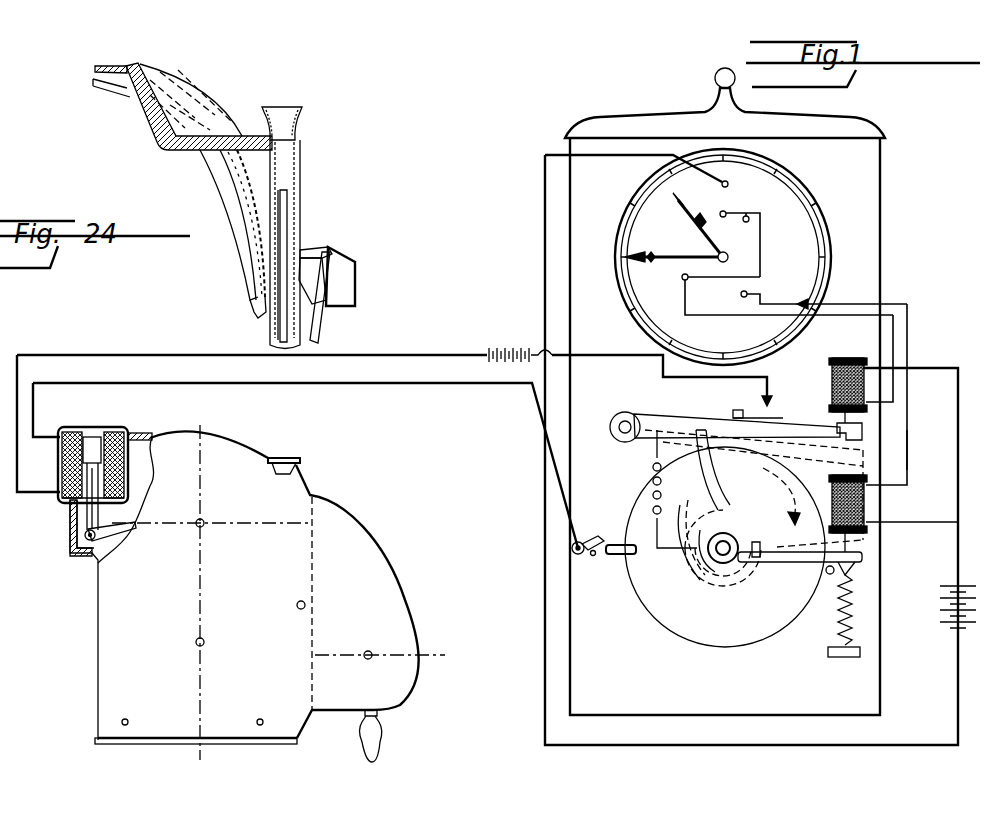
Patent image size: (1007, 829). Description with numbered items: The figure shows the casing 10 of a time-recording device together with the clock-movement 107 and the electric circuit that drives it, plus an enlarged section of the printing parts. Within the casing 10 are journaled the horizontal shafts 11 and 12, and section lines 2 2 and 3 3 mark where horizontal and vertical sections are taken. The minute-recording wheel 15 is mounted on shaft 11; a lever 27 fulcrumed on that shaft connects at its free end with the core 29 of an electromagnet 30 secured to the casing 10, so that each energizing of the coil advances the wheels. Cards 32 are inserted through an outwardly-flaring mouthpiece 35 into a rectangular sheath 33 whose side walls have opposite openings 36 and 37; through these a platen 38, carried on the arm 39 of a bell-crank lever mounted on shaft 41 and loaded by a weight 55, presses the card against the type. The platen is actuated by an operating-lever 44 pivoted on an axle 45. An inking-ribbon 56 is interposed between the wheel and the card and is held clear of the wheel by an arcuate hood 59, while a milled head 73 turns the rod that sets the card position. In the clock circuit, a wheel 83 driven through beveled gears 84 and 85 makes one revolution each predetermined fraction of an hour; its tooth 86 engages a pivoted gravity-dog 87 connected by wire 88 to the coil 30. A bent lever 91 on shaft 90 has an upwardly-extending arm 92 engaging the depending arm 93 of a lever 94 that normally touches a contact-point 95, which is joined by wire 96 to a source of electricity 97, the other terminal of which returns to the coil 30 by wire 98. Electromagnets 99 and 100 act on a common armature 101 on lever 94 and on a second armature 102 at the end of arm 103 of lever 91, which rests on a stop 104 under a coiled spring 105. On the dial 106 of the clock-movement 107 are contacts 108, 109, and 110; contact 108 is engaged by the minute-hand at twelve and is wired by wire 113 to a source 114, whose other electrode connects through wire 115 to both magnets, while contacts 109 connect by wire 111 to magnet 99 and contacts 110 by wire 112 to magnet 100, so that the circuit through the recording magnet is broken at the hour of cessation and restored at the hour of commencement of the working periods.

In FIG. 1, the section line 2 2 is at (60, 535).
In FIG. 1, the section line 3 3 is at (200, 594).
In FIG. 1, the casing 10 is at (98, 625).
In FIG. 1, the shaft 11 is at (217, 510).
In FIG. 1, the shaft 12 is at (205, 642).
In FIG. 24, the minute-recording wheel 15 is at (248, 242).
In FIG. 1, the lever 27 is at (113, 521).
In FIG. 1, the core 29 is at (87, 513).
In FIG. 1, the electromagnet 30 is at (60, 461).
In FIG. 24, the card 32 is at (287, 210).
In FIG. 24, the sheath 33 is at (293, 175).
In FIG. 24, the mouthpiece 35 is at (302, 122).
In FIG. 1, the mouthpiece 35 is at (292, 457).
In FIG. 24, the opening 36 is at (300, 250).
In FIG. 24, the opening 37 is at (278, 236).
In FIG. 24, the platen 38 is at (312, 278).
In FIG. 24, the arm 39 is at (320, 328).
In FIG. 1, the shaft 41 is at (305, 601).
In FIG. 1, the operating-lever 44 is at (380, 735).
In FIG. 1, the axle 45 is at (372, 651).
In FIG. 24, the weight 55 is at (355, 293).
In FIG. 24, the ribbon 56 is at (255, 318).
In FIG. 24, the arcuate hood 59 is at (243, 173).
In FIG. 1, the milled head 73 is at (300, 462).
In FIG. 1, the wheel 83 is at (725, 547).
In FIG. 1, the beveled gear 84 is at (769, 496).
In FIG. 1, the beveled gear 85 is at (715, 577).
In FIG. 1, the tooth 86 is at (610, 561).
In FIG. 1, the gravity-dog 87 is at (597, 540).
In FIG. 1, the wire 88 is at (305, 465).
In FIG. 1, the shaft 90 is at (737, 546).
In FIG. 1, the bent lever 91 is at (706, 557).
In FIG. 1, the arm 92 is at (690, 527).
In FIG. 1, the depending arm 93 is at (712, 467).
In FIG. 1, the lever 94 is at (681, 417).
In FIG. 1, the contact-point 95 is at (773, 408).
In FIG. 1, the wire 96 is at (602, 348).
In FIG. 1, the source of electricity 97 is at (500, 350).
In FIG. 1, the wire 98 is at (252, 408).
In FIG. 1, the electromagnet 99 is at (868, 365).
In FIG. 1, the electromagnet 100 is at (866, 505).
In FIG. 1, the armature 101 is at (862, 428).
In FIG. 1, the armature 102 is at (864, 556).
In FIG. 1, the arm 103 is at (784, 569).
In FIG. 1, the stop 104 is at (830, 577).
In FIG. 1, the coiled spring 105 is at (858, 606).
In FIG. 1, the dial 106 is at (723, 257).
In FIG. 1, the clock-movement 107 is at (746, 391).
In FIG. 1, the contact 108 is at (727, 183).
In FIG. 1, the contact 109 is at (771, 251).
In FIG. 1, the contact 110 is at (762, 294).
In FIG. 1, the wire 111 is at (852, 392).
In FIG. 1, the wire 112 is at (907, 458).
In FIG. 1, the wire 113 is at (545, 555).
In FIG. 1, the source of electricity 114 is at (947, 612).
In FIG. 1, the wire 115 is at (958, 483).